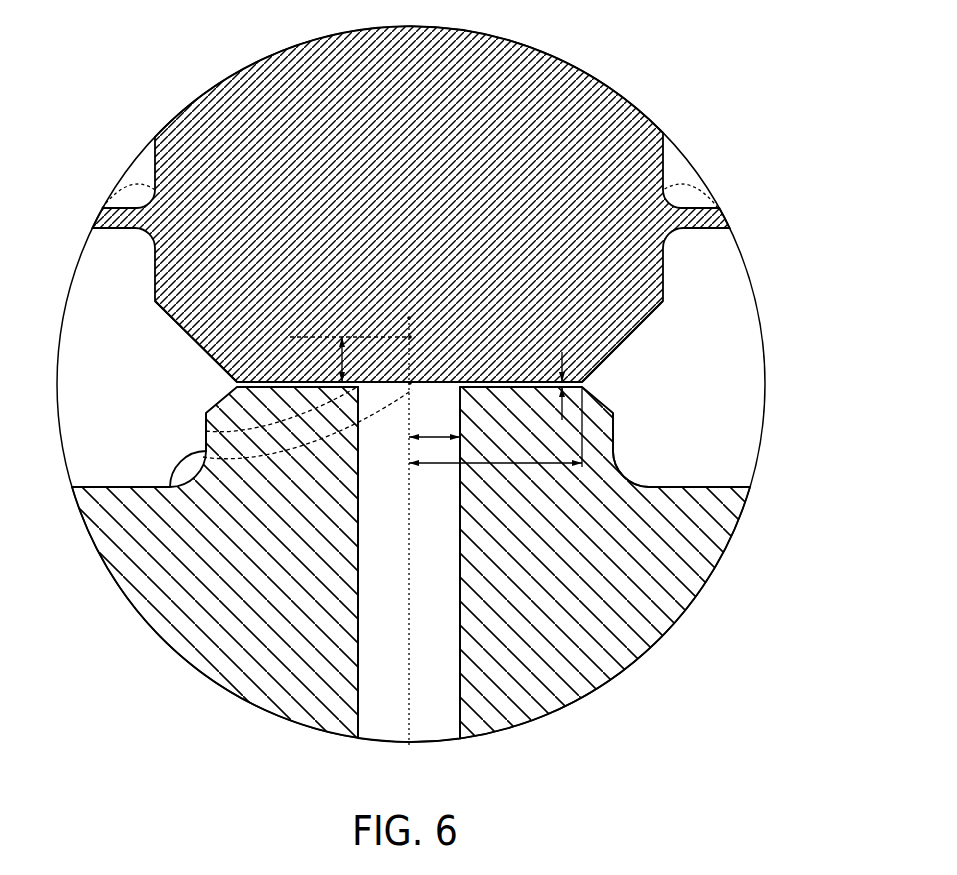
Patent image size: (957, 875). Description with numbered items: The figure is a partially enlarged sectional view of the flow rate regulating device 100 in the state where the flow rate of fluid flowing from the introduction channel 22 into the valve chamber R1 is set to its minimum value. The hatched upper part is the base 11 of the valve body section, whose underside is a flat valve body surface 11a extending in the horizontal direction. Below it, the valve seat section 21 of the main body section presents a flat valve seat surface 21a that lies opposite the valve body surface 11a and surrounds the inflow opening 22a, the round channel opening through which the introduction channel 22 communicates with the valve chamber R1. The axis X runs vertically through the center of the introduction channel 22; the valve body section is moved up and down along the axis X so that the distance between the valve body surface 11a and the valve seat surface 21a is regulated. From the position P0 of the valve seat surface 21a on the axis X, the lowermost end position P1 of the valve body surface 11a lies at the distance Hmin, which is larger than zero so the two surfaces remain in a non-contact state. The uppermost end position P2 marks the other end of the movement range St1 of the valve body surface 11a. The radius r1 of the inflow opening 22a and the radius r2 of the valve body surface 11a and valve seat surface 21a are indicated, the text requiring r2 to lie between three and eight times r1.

The flow rate regulating device 100 is at (658, 73).
The base 11 is at (410, 219).
The valve body surface 11a is at (222, 372).
The valve seat section 21 is at (411, 557).
The valve seat surface 21a is at (222, 373).
The introduction channel 22 is at (434, 698).
The inflow opening 22a is at (206, 431).
The axis X is at (410, 627).
The valve chamber R1 is at (110, 387).
The movement range St1 is at (349, 359).
The position of the valve seat surface on the axis P0 is at (435, 369).
The lowermost end position P1 is at (391, 353).
The uppermost end position P2 is at (434, 314).
The distance Hmin is at (531, 386).
The radius of the inflow opening r1 is at (434, 425).
The radius of the valve body surface and valve seat surface r2 is at (495, 427).